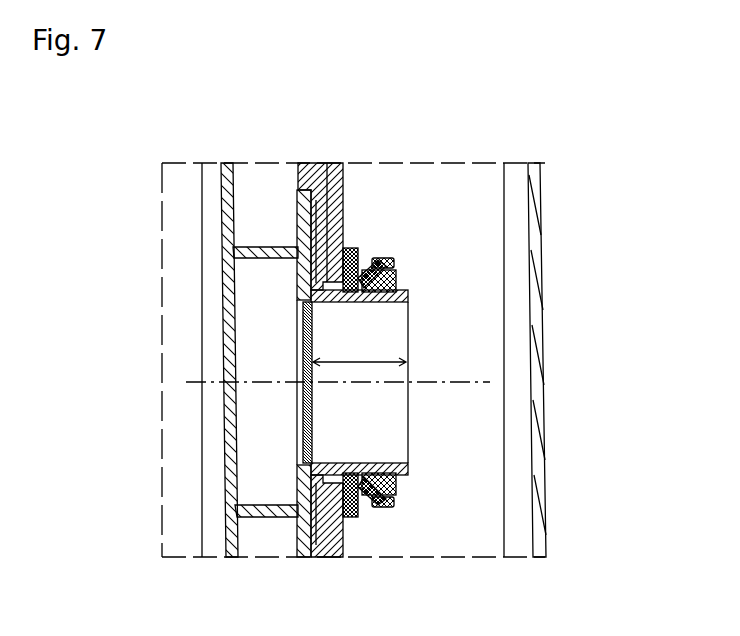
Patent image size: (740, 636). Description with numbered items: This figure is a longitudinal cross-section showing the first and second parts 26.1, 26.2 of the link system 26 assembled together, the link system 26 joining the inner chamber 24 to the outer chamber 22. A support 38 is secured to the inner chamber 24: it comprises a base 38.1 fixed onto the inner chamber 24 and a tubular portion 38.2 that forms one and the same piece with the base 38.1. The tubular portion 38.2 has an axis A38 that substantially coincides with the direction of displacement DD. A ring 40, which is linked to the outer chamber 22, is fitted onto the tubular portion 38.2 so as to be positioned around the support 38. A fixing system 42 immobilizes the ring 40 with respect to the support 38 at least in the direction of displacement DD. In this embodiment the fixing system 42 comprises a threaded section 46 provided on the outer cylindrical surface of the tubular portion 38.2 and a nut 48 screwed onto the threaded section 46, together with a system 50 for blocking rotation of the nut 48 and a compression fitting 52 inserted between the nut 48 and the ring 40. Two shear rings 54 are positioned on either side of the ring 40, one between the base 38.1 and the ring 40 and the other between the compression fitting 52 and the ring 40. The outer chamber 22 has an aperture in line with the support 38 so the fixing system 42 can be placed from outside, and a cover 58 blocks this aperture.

The outer chamber 22 is at (560, 218).
The inner chamber 24 is at (214, 517).
The link system 26 is at (414, 206).
The first part of the link system 26.1 is at (356, 199).
The second part of the link system 26.2 is at (428, 472).
The support 38 is at (322, 512).
The base 38.1 is at (308, 530).
The tubular portion 38.2 is at (346, 469).
The ring 40 is at (345, 226).
The fixing system 42 is at (390, 537).
The threaded section 46 is at (410, 297).
The nut 48 is at (395, 490).
The system for blocking rotation of the nut 50 is at (378, 260).
The compression fitting 52 is at (349, 520).
The shear rings 54 is at (342, 280).
The cover 58 is at (547, 385).
The axis of the tubular portion A38 is at (190, 382).
The direction of displacement DD is at (359, 348).